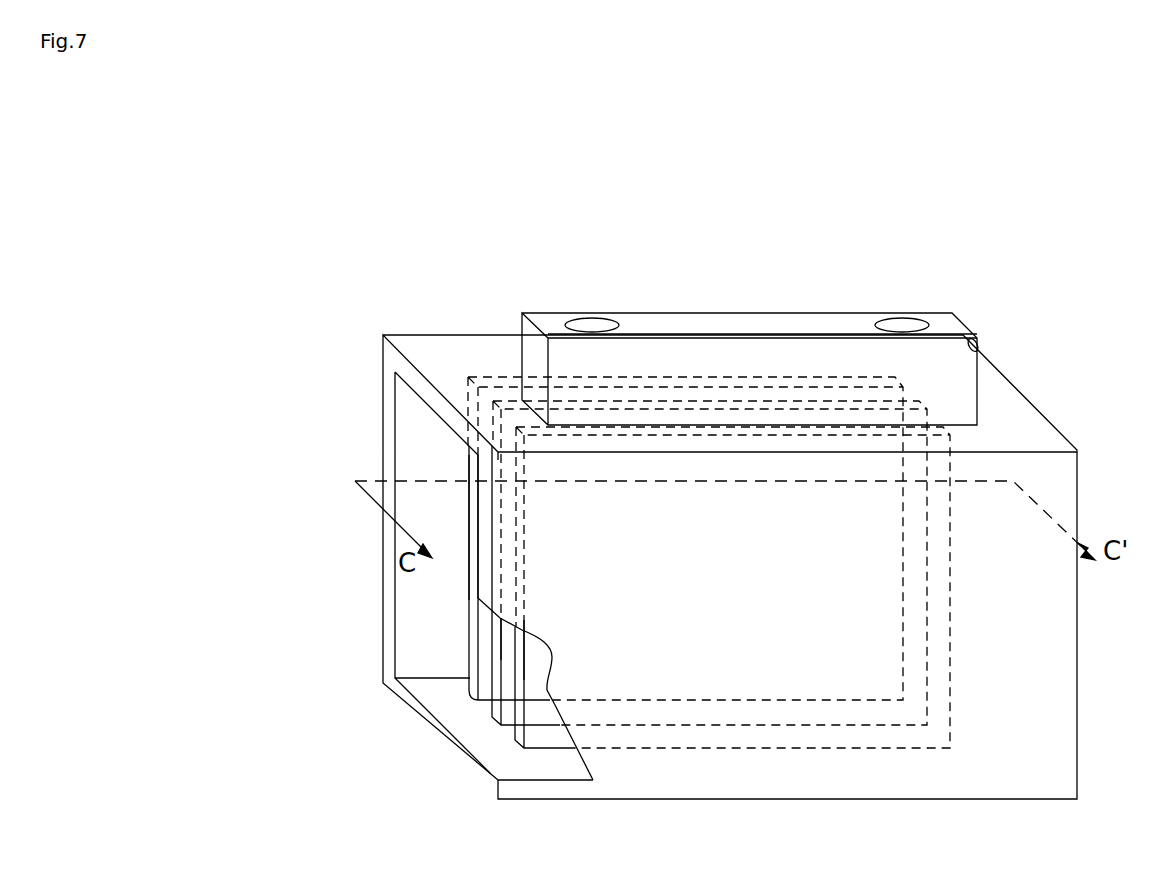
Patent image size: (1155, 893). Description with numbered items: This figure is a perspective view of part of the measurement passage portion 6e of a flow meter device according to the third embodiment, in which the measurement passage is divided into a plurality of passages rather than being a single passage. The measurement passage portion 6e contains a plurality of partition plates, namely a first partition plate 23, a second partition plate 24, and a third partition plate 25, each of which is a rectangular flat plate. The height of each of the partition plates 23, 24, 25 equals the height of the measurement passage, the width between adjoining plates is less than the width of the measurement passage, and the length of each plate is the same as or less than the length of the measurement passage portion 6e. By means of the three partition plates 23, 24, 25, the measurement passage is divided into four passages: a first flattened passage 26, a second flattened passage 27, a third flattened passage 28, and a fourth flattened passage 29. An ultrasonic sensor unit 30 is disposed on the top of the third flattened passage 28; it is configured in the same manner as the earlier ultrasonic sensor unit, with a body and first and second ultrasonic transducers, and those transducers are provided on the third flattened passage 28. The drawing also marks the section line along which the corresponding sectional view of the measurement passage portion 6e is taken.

The measurement passage portion 6e is at (383, 425).
The ultrasonic sensor unit 30 is at (672, 313).
The first partition plate 23 is at (469, 682).
The second partition plate 24 is at (497, 712).
The third partition plate 25 is at (518, 750).
The first flattened passage 26 is at (460, 572).
The second flattened passage 27 is at (482, 613).
The third flattened passage 28 is at (507, 642).
The fourth flattened passage 29 is at (527, 663).